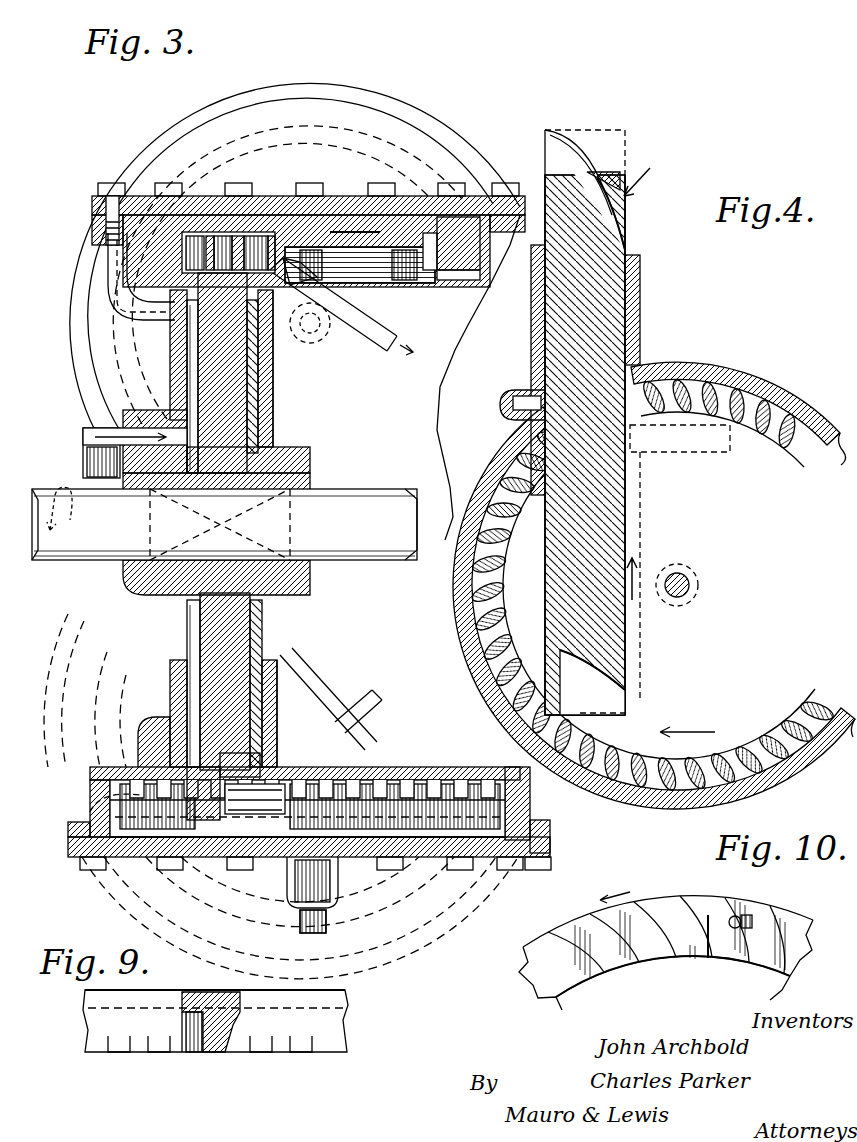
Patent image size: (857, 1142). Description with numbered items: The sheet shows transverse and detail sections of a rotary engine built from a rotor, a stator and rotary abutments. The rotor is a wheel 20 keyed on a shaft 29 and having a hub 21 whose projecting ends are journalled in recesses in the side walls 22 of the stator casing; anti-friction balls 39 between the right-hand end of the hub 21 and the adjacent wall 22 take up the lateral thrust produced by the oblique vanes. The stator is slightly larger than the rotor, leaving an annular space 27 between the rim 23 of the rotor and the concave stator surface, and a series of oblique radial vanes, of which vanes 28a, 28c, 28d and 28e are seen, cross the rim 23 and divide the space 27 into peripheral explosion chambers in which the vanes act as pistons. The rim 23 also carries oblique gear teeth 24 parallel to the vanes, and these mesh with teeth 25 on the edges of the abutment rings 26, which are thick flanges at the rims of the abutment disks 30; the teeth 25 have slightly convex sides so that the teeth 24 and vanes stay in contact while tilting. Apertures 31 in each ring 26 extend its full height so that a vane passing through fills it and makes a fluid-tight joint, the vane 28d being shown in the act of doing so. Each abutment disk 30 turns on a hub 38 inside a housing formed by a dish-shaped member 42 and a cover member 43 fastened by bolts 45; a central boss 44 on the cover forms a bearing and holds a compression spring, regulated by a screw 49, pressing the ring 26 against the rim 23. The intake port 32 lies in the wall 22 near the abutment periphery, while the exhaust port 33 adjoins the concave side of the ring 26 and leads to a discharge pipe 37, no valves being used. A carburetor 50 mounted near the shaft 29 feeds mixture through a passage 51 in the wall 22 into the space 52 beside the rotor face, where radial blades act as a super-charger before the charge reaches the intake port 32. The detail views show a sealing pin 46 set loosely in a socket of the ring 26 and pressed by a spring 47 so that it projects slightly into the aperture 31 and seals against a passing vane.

In FIG. 3, the rotor wheel 20 is at (232, 402).
In FIG. 4, the rotor wheel 20 is at (632, 562).
In FIG. 3, the hub 21 is at (306, 587).
In FIG. 3, the side walls 22 is at (187, 355).
In FIG. 4, the side walls 22 is at (520, 402).
In FIG. 3, the rim 23 is at (288, 345).
In FIG. 4, the rim 23 is at (646, 171).
In FIG. 3, the gear teeth 24 is at (262, 232).
In FIG. 4, the gear teeth 24 is at (628, 270).
In FIG. 4, the gear teeth 25 is at (733, 752).
In FIG. 9, the gear teeth 25 is at (250, 1049).
In FIG. 10, the gear teeth 25 is at (660, 914).
In FIG. 3, the abutment ring 26 is at (495, 197).
In FIG. 4, the abutment ring 26 is at (690, 382).
In FIG. 9, the abutment ring 26 is at (85, 1024).
In FIG. 10, the abutment ring 26 is at (561, 935).
In FIG. 3, the annular space 27 is at (257, 235).
In FIG. 3, the radial vane 28a is at (210, 232).
In FIG. 3, the radial vane 28c is at (242, 800).
In FIG. 4, the radial vane 28c is at (610, 692).
In FIG. 4, the radial vane 28d is at (617, 482).
In FIG. 4, the radial vane 28e is at (597, 228).
In FIG. 3, the shaft 29 is at (90, 552).
In FIG. 3, the abutment disk 30 is at (365, 212).
In FIG. 4, the abutment disk 30 is at (762, 437).
In FIG. 9, the abutment disk 30 is at (160, 995).
In FIG. 3, the aperture 31 is at (410, 780).
In FIG. 9, the aperture 31 is at (182, 1040).
In FIG. 10, the aperture 31 is at (680, 966).
In FIG. 3, the intake port 32 is at (80, 813).
In FIG. 4, the intake port 32 is at (508, 410).
In FIG. 3, the exhaust port 33 is at (355, 230).
In FIG. 4, the exhaust port 33 is at (652, 452).
In FIG. 3, the discharge pipe 37 is at (392, 335).
In FIG. 4, the hub 38 is at (692, 588).
In FIG. 3, the anti-friction balls 39 is at (312, 477).
In FIG. 3, the dish-shaped member 42 is at (470, 205).
In FIG. 3, the cover member 43 is at (135, 196).
In FIG. 3, the central boss 44 is at (330, 892).
In FIG. 3, the bolts 45 is at (112, 184).
In FIG. 9, the pin 46 is at (193, 1052).
In FIG. 10, the pin 46 is at (702, 940).
In FIG. 9, the spring 47 is at (207, 1055).
In FIG. 10, the spring 47 is at (745, 921).
In FIG. 3, the screw 49 is at (327, 921).
In FIG. 3, the carburetor 50 is at (83, 452).
In FIG. 3, the passage 51 is at (150, 420).
In FIG. 3, the space 52 is at (172, 325).